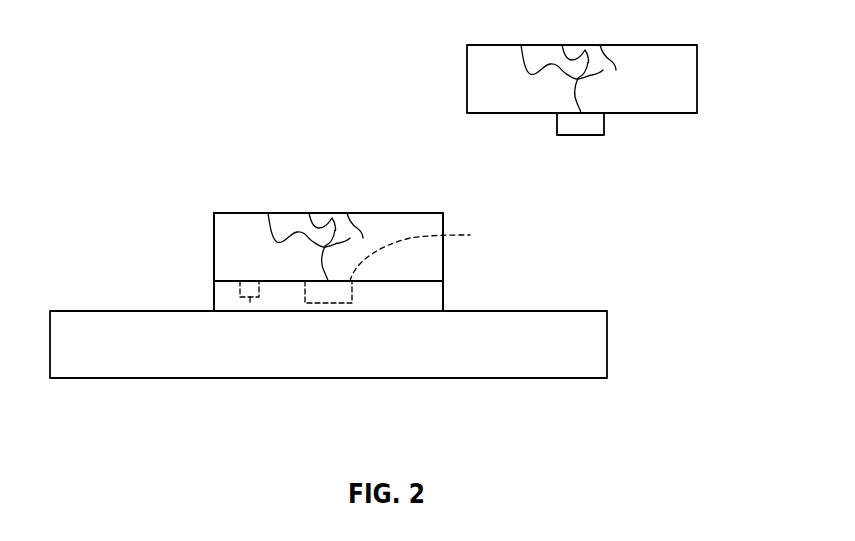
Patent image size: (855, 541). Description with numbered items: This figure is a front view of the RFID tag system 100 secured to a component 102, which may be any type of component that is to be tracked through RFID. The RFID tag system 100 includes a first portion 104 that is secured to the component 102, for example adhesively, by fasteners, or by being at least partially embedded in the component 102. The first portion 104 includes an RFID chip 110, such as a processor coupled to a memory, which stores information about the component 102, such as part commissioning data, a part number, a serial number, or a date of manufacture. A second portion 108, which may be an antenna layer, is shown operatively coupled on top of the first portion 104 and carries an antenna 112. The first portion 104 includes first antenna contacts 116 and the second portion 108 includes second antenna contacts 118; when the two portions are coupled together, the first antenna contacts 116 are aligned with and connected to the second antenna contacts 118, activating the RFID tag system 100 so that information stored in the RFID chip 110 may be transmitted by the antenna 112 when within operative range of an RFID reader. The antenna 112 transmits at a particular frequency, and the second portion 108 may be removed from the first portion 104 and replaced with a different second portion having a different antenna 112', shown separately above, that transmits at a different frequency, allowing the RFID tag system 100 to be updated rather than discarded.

The RFID tag system 100 is at (201, 214).
The component 102 is at (576, 310).
The first portion 104 is at (445, 295).
The second portion 108 is at (400, 212).
The RFID chip 110 is at (250, 302).
The antenna 112 is at (315, 221).
The different antenna 112' is at (582, 68).
The first antenna contacts 116 is at (328, 303).
The second antenna contacts 118 is at (430, 251).